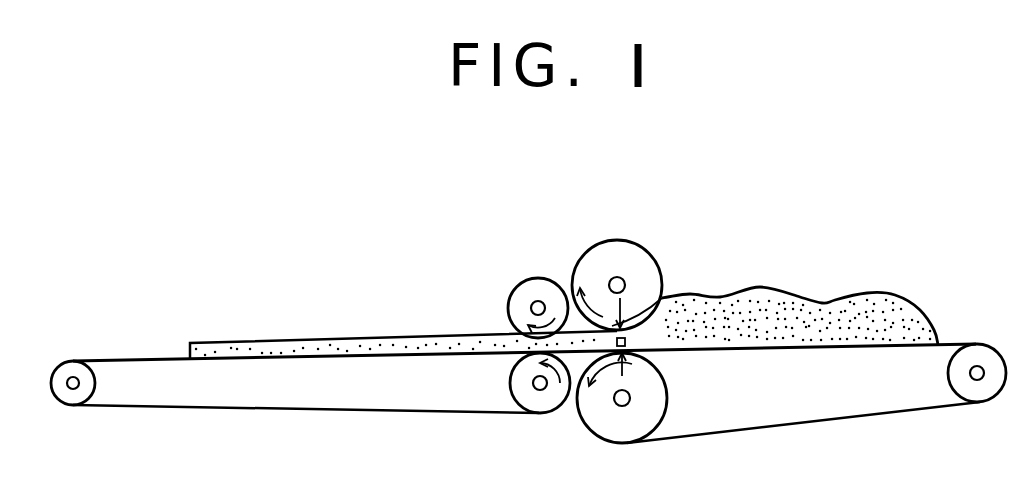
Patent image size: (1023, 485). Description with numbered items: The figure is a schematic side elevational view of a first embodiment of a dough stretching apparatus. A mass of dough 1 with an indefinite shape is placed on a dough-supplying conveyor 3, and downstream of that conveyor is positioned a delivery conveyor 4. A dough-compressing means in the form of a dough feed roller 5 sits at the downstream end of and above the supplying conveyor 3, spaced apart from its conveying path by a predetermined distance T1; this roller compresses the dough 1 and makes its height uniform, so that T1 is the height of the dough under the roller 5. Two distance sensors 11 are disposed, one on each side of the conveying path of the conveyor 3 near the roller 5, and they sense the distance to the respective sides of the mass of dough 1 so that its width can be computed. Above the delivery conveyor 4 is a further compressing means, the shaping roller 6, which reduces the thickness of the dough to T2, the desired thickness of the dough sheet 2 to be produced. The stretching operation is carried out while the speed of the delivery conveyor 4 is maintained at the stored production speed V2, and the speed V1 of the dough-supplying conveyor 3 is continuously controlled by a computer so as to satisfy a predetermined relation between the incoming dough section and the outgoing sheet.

The mass of dough 1 is at (838, 298).
The dough sheet 2 is at (217, 343).
The dough-supplying conveyor 3 is at (942, 345).
The delivery conveyor 4 is at (103, 360).
The dough feed roller 5 is at (632, 242).
The shaping roller 6 is at (537, 280).
The distance sensor 11 is at (627, 342).
The predetermined distance T1 is at (662, 300).
The thickness of dough sheet T2 is at (265, 385).
The speed of dough-supplying conveyor V1 is at (757, 360).
The production speed V2 is at (350, 367).